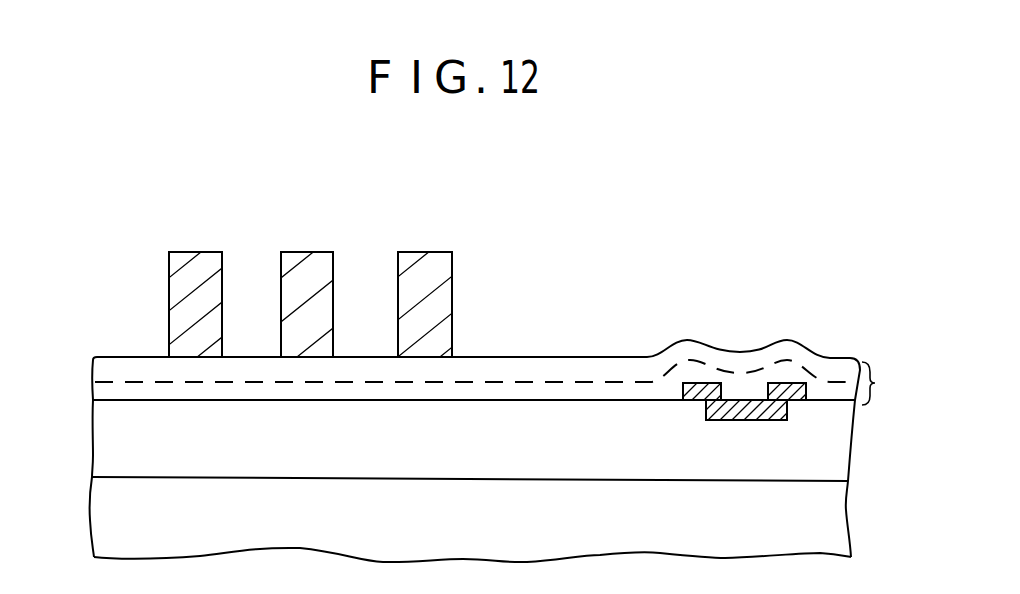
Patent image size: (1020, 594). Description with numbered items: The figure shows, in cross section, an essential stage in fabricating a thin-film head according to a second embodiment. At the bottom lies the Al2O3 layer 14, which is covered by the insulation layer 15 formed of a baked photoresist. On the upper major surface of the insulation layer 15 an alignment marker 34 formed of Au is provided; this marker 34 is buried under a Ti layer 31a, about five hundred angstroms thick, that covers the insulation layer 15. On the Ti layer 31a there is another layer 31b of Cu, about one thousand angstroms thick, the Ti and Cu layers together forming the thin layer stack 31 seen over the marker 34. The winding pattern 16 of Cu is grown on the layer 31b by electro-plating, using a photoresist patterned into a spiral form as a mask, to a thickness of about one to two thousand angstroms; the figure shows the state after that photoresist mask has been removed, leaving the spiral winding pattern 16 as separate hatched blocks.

The Al2O3 layer 14 is at (108, 498).
The insulation layer 15 is at (110, 437).
The winding pattern 16 is at (350, 222).
The Ti and Cu layers 31 is at (888, 383).
The Ti layer 31a is at (95, 387).
The layer of Cu 31b is at (93, 358).
The alignment marker 34 is at (745, 410).